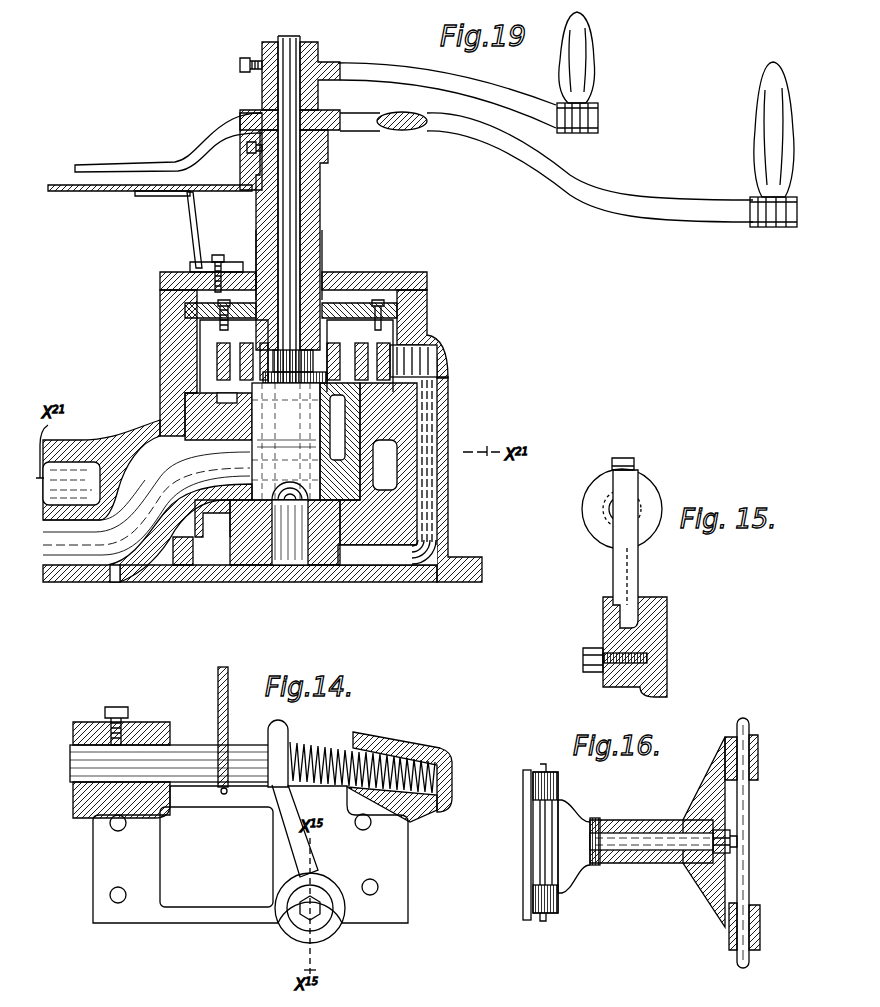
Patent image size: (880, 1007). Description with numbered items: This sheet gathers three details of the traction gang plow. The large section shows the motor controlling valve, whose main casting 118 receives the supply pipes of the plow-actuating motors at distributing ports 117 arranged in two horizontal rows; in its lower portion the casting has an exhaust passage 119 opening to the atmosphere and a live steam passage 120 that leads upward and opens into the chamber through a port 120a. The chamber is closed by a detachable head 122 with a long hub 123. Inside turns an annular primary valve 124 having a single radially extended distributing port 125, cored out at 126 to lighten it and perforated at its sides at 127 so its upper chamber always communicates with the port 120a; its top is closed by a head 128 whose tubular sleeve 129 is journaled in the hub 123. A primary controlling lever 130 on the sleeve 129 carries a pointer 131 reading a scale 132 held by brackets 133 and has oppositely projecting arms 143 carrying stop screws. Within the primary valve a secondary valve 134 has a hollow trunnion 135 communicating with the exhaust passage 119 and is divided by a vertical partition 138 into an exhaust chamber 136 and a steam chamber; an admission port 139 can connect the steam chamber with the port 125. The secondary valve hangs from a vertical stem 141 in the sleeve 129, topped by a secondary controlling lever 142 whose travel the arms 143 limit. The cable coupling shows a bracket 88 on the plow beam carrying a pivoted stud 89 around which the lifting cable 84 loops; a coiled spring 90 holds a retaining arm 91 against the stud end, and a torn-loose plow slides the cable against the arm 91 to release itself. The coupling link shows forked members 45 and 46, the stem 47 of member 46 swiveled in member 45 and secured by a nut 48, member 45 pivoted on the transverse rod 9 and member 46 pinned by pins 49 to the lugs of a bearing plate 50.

In FIG. 19, the secondary controlling lever 142 is at (507, 108).
In FIG. 19, the oppositely projecting arms 143 is at (418, 130).
In FIG. 19, the primary controlling lever 130 is at (648, 213).
In FIG. 19, the pointer 131 is at (143, 160).
In FIG. 19, the scale 132 is at (66, 185).
In FIG. 19, the brackets 133 is at (190, 228).
In FIG. 19, the head 128 is at (222, 310).
In FIG. 19, the vertical stem 141 is at (326, 205).
In FIG. 19, the sleeve or long hub 123 is at (325, 224).
In FIG. 19, the tubular sleeve 129 is at (325, 250).
In FIG. 19, the detachable head 122 is at (393, 272).
In FIG. 19, the port 120a is at (445, 345).
In FIG. 19, the main casting 118 is at (455, 400).
In FIG. 19, the cored out portion 126 is at (380, 430).
In FIG. 19, the annular primary valve 124 is at (423, 480).
In FIG. 19, the live steam passage 120 is at (427, 505).
In FIG. 19, the exhaust chamber 136 is at (408, 517).
In FIG. 19, the distributing ports 117 is at (80, 495).
In FIG. 19, the distributing port 125 is at (173, 437).
In FIG. 19, the secondary valve 134 is at (232, 398).
In FIG. 19, the perforations 127 is at (227, 362).
In FIG. 19, the vertical partition 138 is at (240, 425).
In FIG. 19, the admission port 139 is at (235, 452).
In FIG. 19, the hollow trunnion 135 is at (298, 537).
In FIG. 19, the exhaust passage 119 is at (283, 580).
In FIG. 15, the stud 89 is at (626, 512).
In FIG. 14, the stud 89 is at (190, 752).
In FIG. 15, the retaining arm 91 is at (620, 595).
In FIG. 14, the retaining arm 91 is at (287, 822).
In FIG. 15, the bracket 88 is at (657, 642).
In FIG. 14, the bracket 88 is at (234, 887).
In FIG. 14, the cable 84 is at (227, 722).
In FIG. 14, the coiled spring 90 is at (331, 746).
In FIG. 16, the stems 47 is at (640, 833).
In FIG. 16, the nuts 48 is at (722, 835).
In FIG. 16, the forked member 46 is at (572, 862).
In FIG. 16, the forked member 45 is at (715, 877).
In FIG. 16, the transverse rod 9 is at (746, 885).
In FIG. 16, the bearing plates 50 is at (529, 900).
In FIG. 16, the pins 49 is at (552, 913).